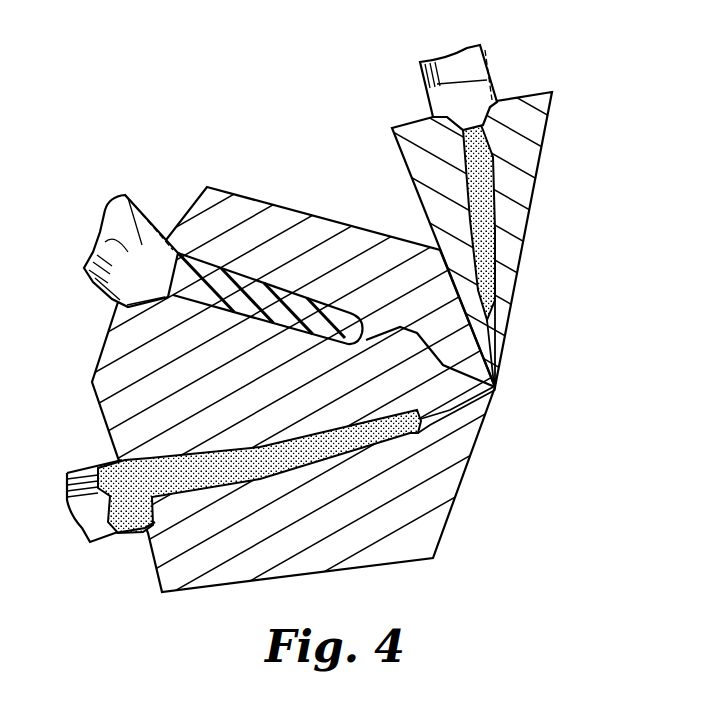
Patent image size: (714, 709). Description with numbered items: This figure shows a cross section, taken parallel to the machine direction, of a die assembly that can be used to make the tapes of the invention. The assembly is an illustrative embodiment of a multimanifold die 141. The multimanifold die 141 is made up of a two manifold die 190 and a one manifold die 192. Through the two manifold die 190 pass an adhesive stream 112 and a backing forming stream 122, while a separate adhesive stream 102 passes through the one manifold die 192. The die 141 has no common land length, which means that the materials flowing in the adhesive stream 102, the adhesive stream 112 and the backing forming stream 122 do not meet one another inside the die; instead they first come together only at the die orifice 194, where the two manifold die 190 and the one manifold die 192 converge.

The multimanifold die 141 is at (280, 107).
The adhesive stream 102 is at (492, 86).
The adhesive stream 112 is at (122, 533).
The backing forming stream 122 is at (113, 296).
The two manifold die 190 is at (368, 566).
The one manifold die 192 is at (528, 163).
The die orifice 194 is at (498, 386).